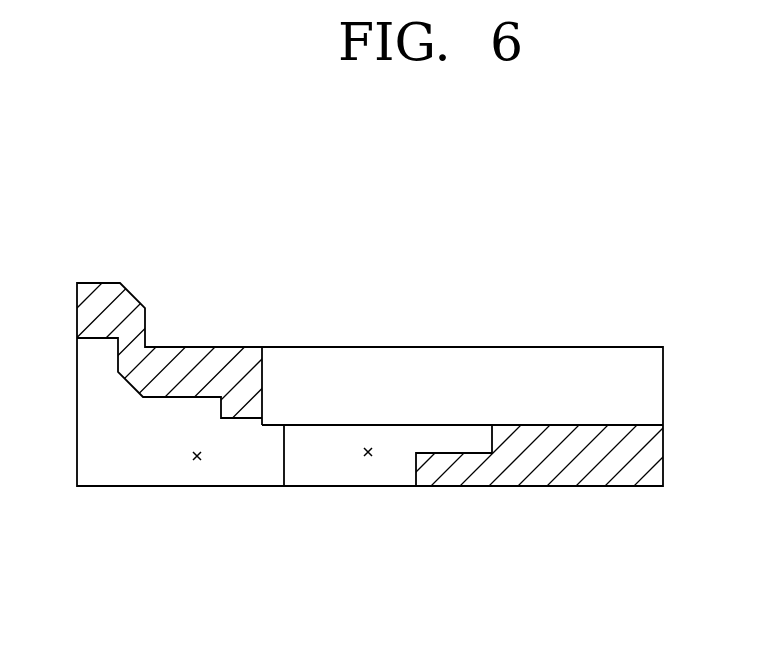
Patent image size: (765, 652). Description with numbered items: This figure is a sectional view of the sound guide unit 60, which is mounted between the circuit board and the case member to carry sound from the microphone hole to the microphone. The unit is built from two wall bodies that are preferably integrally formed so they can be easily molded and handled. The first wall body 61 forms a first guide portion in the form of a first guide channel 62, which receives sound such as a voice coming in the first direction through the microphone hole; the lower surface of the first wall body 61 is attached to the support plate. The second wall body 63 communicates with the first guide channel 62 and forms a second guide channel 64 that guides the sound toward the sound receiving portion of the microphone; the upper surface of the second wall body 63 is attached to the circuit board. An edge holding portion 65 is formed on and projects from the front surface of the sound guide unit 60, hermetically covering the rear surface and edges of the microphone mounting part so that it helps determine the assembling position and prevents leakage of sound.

The sound guide unit 60 is at (401, 260).
The first wall body 61 is at (193, 370).
The first guide channel 62 is at (198, 462).
The second wall body 63 is at (452, 470).
The second guide channel 64 is at (368, 459).
The edge holding portion 65 is at (605, 390).